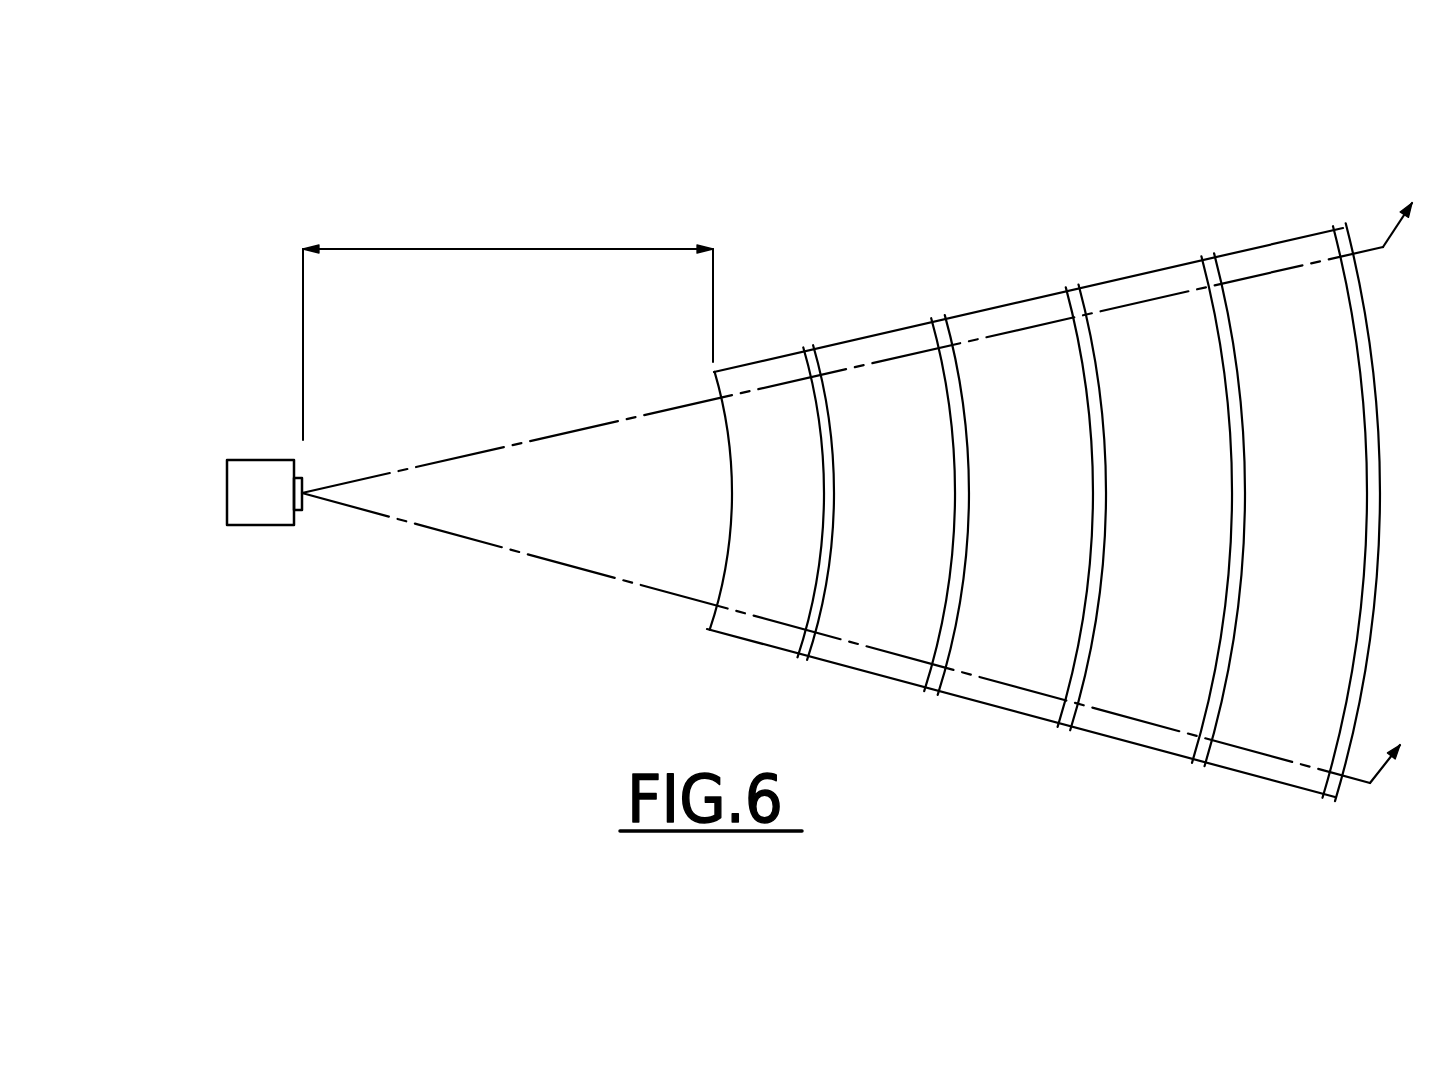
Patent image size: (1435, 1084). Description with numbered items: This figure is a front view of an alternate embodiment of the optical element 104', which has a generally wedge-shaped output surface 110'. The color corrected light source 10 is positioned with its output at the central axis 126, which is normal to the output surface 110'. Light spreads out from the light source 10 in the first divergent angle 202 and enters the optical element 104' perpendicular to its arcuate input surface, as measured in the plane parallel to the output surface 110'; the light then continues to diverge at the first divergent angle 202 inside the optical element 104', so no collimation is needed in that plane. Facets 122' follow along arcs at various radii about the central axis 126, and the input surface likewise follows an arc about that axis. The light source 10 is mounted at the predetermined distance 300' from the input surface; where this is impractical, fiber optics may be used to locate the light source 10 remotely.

The color corrected light source 10 is at (243, 458).
The central axis 126 is at (318, 478).
The first divergent angle 202 is at (403, 440).
The predetermined distance 300' is at (508, 326).
The optical element 104' is at (1004, 527).
The output surface 110' is at (697, 501).
The facets 122' is at (1029, 527).